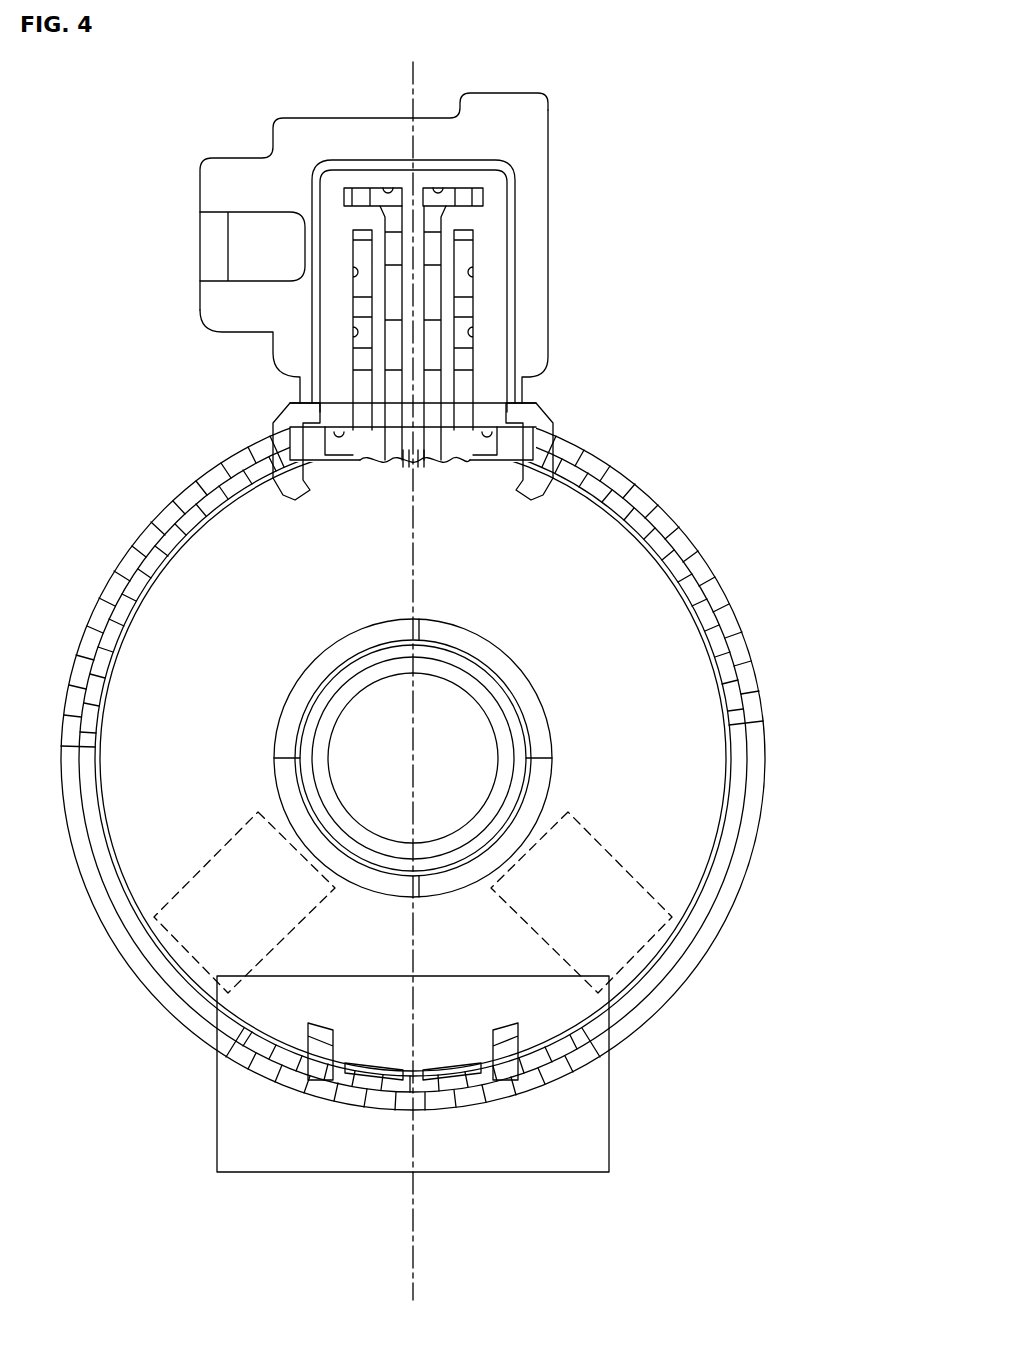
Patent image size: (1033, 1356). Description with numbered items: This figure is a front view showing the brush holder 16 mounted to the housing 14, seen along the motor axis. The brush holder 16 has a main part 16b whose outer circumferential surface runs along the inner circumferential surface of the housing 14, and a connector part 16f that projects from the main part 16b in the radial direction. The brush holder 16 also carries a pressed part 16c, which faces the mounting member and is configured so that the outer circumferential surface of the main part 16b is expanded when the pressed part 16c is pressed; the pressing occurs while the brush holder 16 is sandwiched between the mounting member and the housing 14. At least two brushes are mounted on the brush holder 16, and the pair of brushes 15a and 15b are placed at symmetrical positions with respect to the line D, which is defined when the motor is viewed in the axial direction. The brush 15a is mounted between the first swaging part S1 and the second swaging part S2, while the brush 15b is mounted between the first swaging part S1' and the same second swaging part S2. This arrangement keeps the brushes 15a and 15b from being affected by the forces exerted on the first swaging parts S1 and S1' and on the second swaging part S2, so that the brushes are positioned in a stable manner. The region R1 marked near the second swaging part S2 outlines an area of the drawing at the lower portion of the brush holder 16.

The housing 14 is at (688, 979).
The brush 15a is at (197, 925).
The brush 15b is at (627, 892).
The brush holder 16 is at (578, 355).
The main part 16b is at (575, 586).
The pressed part 16c is at (278, 430).
The connector part 16f is at (548, 177).
The first swaging part S1 is at (158, 591).
The first swaging part S1' is at (669, 580).
The second swaging part S2 is at (421, 1122).
The region R1 is at (609, 1143).
The line D- D is at (404, 71).